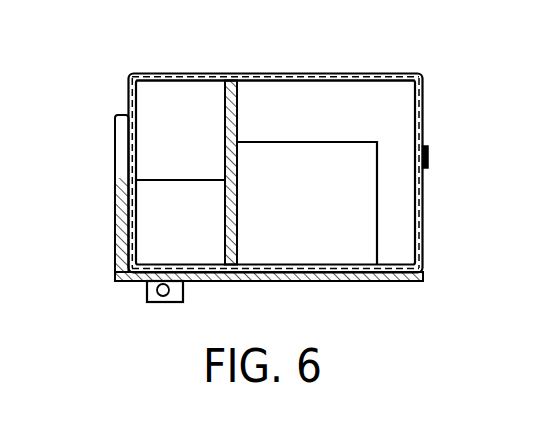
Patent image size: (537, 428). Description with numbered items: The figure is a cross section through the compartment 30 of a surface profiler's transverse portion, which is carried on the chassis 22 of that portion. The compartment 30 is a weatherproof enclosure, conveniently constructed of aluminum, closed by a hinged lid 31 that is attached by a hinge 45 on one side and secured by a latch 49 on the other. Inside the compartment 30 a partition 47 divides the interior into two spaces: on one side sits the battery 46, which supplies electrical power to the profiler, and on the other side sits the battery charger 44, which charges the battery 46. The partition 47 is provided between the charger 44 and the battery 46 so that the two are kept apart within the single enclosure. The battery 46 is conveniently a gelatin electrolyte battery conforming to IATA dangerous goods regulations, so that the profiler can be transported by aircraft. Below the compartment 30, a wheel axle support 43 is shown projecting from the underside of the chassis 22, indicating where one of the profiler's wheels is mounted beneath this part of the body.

The chassis 22 is at (117, 266).
The compartment 30 is at (425, 220).
The hinged lid 31 is at (356, 73).
The wheel axle support 43 is at (147, 297).
The battery charger 44 is at (337, 237).
The hinge 45 is at (428, 157).
The battery 46 is at (155, 228).
The partition 47 is at (225, 97).
The latch 49 is at (118, 161).